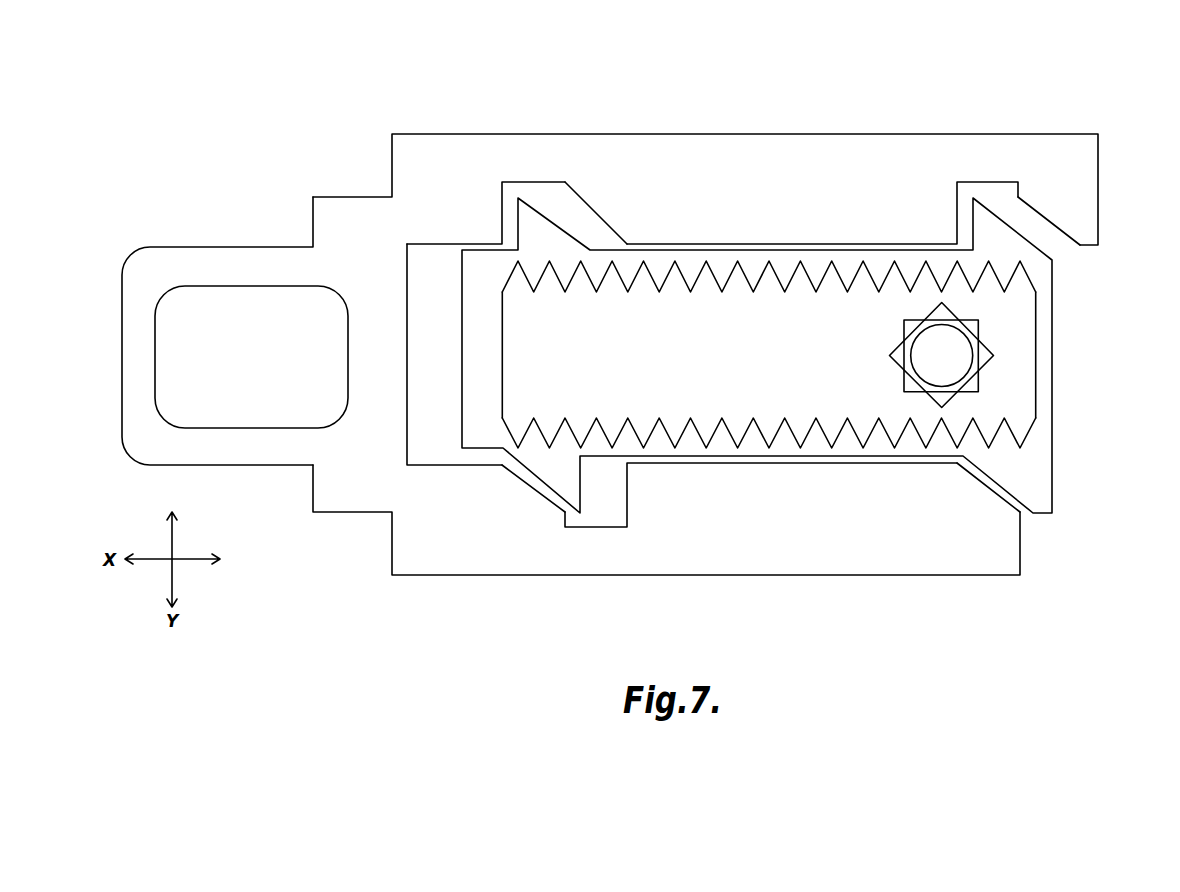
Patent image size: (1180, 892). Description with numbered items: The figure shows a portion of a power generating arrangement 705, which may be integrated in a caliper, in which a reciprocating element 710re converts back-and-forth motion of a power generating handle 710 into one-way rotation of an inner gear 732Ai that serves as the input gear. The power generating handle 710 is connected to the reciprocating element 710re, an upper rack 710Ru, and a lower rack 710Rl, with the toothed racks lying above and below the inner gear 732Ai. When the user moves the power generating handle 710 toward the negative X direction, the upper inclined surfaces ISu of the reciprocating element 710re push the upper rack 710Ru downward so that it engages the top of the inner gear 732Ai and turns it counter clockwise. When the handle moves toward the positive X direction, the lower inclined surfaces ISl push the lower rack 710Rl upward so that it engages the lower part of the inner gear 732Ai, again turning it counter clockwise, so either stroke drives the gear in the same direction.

The power generating arrangement 705 is at (991, 63).
The power generating handle 710 is at (228, 287).
The reciprocating element 710re is at (602, 170).
The upper rack 710Ru is at (692, 273).
The lower rack 710Rl is at (720, 440).
The inner gear 732Ai is at (950, 345).
The upper inclined surfaces ISu is at (607, 230).
The lower inclined surfaces ISl is at (540, 498).